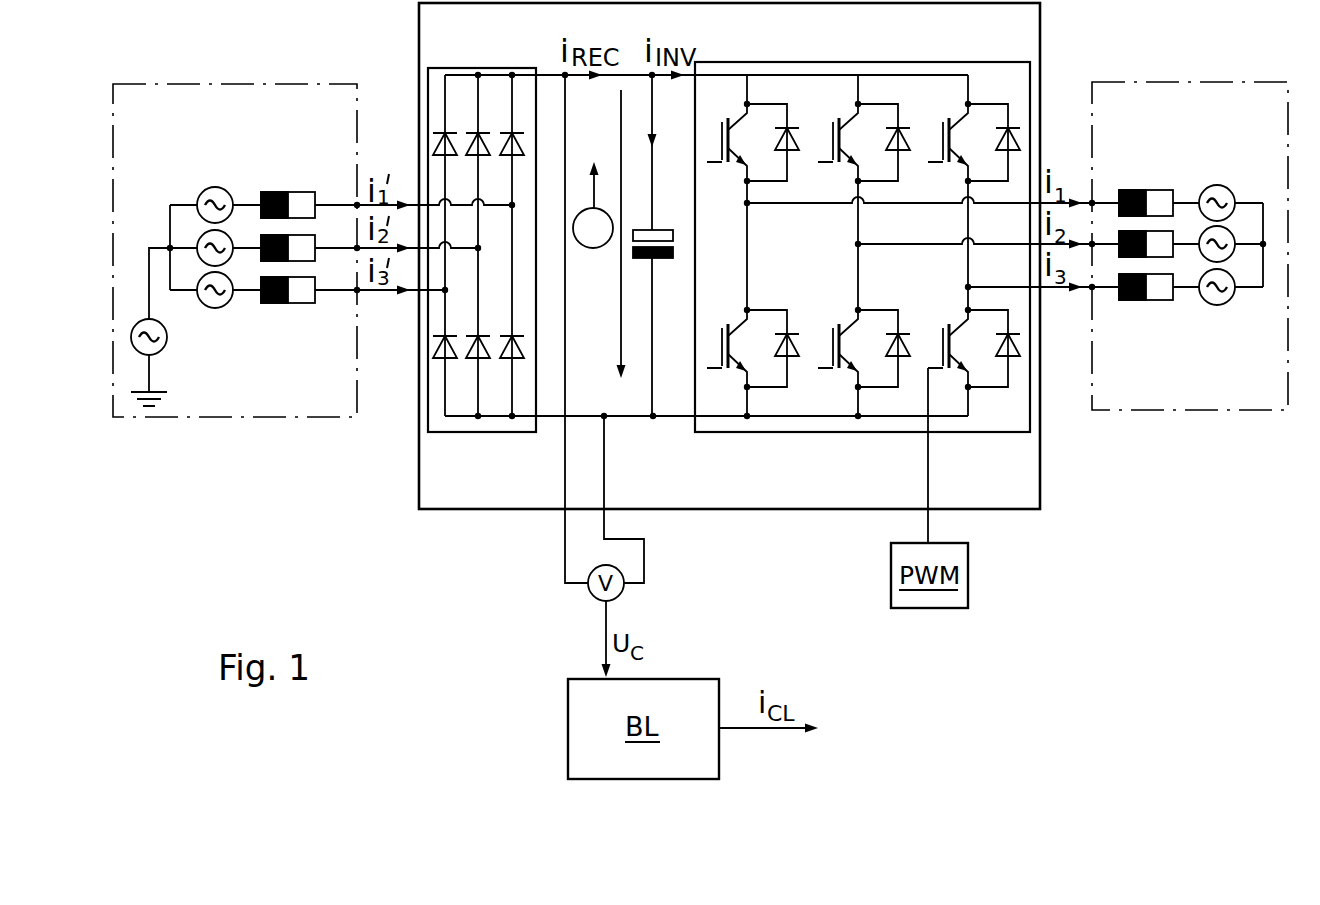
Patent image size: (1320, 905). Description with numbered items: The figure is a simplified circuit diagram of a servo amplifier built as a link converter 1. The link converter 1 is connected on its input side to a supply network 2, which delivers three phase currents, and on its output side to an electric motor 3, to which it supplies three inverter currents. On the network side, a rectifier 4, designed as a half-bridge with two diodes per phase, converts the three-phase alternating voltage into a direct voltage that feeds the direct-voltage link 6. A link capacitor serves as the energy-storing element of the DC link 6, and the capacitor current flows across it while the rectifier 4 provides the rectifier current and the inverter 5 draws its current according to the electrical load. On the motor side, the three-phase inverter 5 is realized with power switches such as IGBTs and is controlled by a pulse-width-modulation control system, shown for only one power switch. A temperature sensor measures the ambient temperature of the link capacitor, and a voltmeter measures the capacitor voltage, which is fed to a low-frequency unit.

The link converter 1 is at (770, 509).
The supply network 2 is at (237, 417).
The electric motor 3 is at (1173, 410).
The rectifier 4 is at (468, 433).
The inverter 5 is at (835, 433).
The direct-voltage link 6 is at (670, 366).